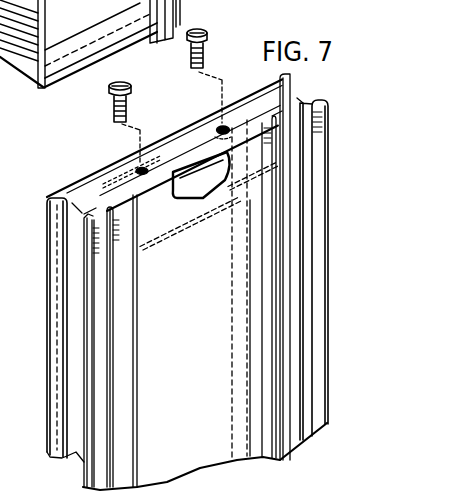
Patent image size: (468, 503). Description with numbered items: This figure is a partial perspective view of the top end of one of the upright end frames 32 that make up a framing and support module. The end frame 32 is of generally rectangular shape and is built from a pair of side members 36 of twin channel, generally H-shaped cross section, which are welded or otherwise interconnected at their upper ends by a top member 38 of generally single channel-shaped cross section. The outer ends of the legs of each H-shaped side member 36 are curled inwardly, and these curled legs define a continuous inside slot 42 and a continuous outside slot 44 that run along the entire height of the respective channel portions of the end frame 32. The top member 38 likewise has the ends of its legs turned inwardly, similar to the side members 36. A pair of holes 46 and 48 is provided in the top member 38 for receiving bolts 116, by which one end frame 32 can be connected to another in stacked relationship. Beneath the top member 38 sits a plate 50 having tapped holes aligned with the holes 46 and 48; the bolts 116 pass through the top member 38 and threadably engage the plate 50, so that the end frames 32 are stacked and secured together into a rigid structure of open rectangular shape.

The end frame 32 is at (99, 158).
The side member 36 is at (328, 207).
The top member 38 is at (180, 139).
The inside slot 42 is at (90, 177).
The outside slot 44 is at (82, 215).
The hole 46 is at (133, 171).
The hole 48 is at (220, 124).
The plate 50 is at (208, 185).
The bolt 116 is at (112, 106).